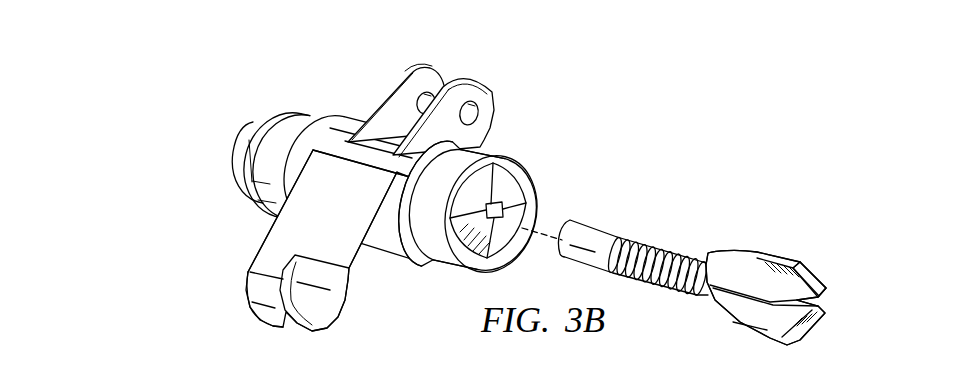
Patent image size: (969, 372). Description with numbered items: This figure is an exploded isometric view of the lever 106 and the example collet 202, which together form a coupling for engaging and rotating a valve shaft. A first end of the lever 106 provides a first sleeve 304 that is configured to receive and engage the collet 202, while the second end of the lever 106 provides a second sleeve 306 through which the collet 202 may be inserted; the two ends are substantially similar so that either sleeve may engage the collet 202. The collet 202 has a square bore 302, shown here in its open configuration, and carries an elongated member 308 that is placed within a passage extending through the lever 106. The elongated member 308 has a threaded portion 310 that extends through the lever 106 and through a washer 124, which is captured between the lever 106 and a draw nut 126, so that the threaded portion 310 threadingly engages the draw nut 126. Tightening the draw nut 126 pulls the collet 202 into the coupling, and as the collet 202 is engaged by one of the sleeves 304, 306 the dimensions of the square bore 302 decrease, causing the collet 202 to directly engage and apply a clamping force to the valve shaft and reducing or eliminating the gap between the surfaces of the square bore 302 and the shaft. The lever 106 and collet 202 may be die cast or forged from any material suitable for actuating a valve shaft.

The lever 106 is at (267, 261).
The washer 124 is at (236, 157).
The draw nut 126 is at (240, 131).
The collet 202 is at (780, 240).
The square bore 302 is at (796, 287).
The first sleeve 304 is at (510, 173).
The second sleeve 306 is at (318, 106).
The elongated member 308 is at (693, 238).
The threaded portion 310 is at (650, 238).